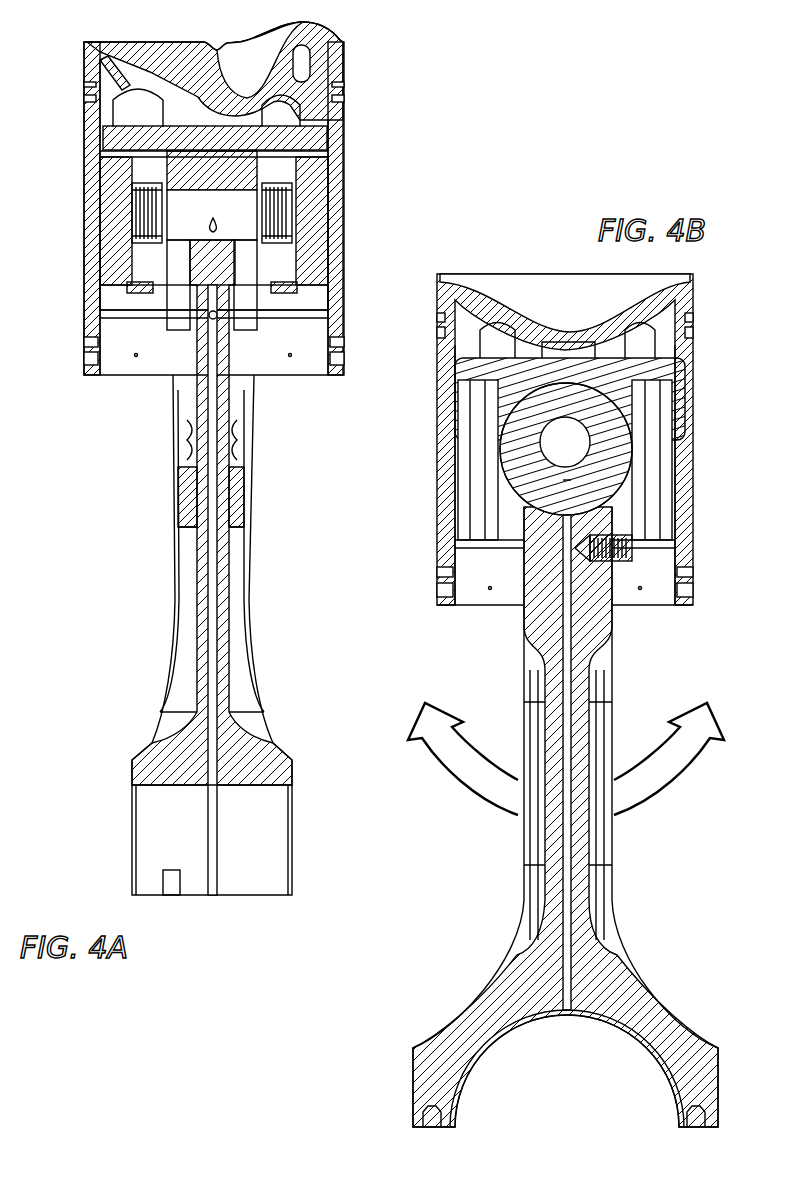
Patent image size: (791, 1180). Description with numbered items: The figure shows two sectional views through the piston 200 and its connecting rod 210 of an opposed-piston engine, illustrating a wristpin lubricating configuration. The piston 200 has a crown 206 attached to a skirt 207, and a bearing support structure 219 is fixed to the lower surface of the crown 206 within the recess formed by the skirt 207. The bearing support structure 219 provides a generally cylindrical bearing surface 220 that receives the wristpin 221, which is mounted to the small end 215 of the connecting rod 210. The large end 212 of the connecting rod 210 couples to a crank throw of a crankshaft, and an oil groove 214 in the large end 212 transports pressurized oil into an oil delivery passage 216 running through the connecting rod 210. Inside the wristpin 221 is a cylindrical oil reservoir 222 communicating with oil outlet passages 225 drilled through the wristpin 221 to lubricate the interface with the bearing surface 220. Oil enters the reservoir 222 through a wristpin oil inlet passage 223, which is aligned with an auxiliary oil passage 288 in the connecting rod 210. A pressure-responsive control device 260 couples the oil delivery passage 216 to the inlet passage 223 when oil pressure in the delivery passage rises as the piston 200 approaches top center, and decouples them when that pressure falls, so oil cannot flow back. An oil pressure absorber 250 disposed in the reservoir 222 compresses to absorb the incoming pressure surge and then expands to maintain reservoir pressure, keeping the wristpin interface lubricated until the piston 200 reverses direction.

In FIG. 4A, the piston 200 is at (356, 207).
In FIG. 4A, the crown 206 is at (345, 60).
In FIG. 4B, the crown 206 is at (692, 295).
In FIG. 4A, the skirt 207 is at (85, 311).
In FIG. 4B, the skirt 207 is at (696, 557).
In FIG. 4A, the connecting rod 210 is at (282, 562).
In FIG. 4B, the connecting rod 210 is at (678, 872).
In FIG. 4A, the large end 212 is at (293, 768).
In FIG. 4B, the large end 212 is at (410, 1083).
In FIG. 4A, the oil groove 214 is at (212, 829).
In FIG. 4B, the oil groove 214 is at (480, 1057).
In FIG. 4A, the small end 215 is at (270, 307).
In FIG. 4B, the small end 215 is at (524, 507).
In FIG. 4A, the oil delivery passage 216 is at (215, 603).
In FIG. 4B, the oil delivery passage 216 is at (566, 830).
In FIG. 4A, the bearing support structure 219 is at (318, 178).
In FIG. 4B, the bearing support structure 219 is at (623, 373).
In FIG. 4B, the bearing surface 220 is at (540, 402).
In FIG. 4A, the wristpin 221 is at (137, 163).
In FIG. 4B, the wristpin 221 is at (615, 422).
In FIG. 4A, the oil reservoir 222 is at (248, 214).
In FIG. 4B, the oil reservoir 222 is at (548, 440).
In FIG. 4A, the wristpin oil inlet passage 223 is at (210, 232).
In FIG. 4B, the wristpin oil inlet passage 223 is at (592, 468).
In FIG. 4A, the oil outlet passages 225 is at (172, 157).
In FIG. 4A, the oil pressure absorber 250 is at (150, 255).
In FIG. 4B, the pressure-responsive control device 260 is at (625, 585).
In FIG. 4B, the auxiliary oil passage 288 is at (595, 512).